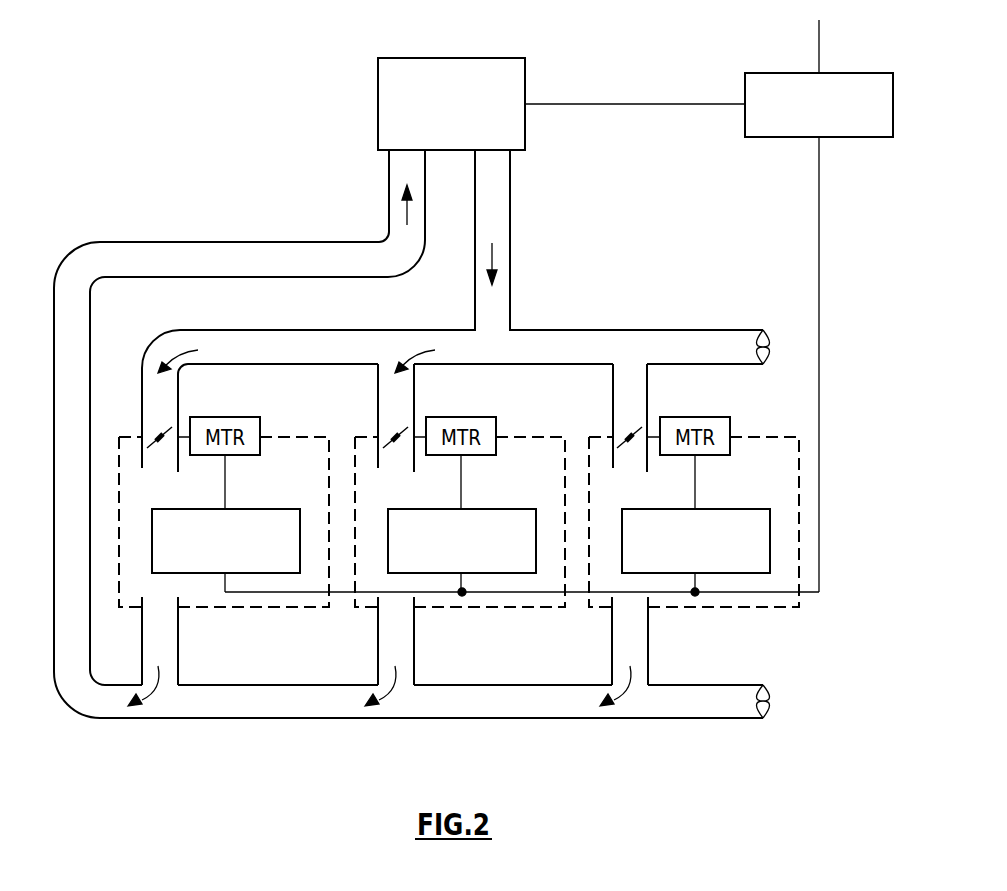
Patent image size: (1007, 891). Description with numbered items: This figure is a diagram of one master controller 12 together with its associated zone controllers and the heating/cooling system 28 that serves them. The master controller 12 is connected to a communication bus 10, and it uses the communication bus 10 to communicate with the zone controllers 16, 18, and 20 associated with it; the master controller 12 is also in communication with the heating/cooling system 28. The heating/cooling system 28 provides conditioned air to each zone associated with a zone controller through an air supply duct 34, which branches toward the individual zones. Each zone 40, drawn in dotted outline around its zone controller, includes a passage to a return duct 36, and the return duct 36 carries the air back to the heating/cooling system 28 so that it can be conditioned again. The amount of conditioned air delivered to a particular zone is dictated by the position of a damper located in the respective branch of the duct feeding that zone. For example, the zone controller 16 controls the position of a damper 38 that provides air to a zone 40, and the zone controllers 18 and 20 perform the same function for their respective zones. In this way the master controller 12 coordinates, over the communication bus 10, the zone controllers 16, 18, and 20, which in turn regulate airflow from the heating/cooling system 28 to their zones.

The communication bus 10 is at (819, 398).
The master controller 12 is at (837, 73).
The zone controller 16 is at (730, 508).
The zone controller 18 is at (497, 508).
The zone controller 20 is at (260, 508).
The heating/cooling system 28 is at (470, 58).
The air supply duct 34 is at (511, 228).
The return duct 36 is at (693, 720).
The damper 38 is at (632, 432).
The zone 40 is at (775, 610).